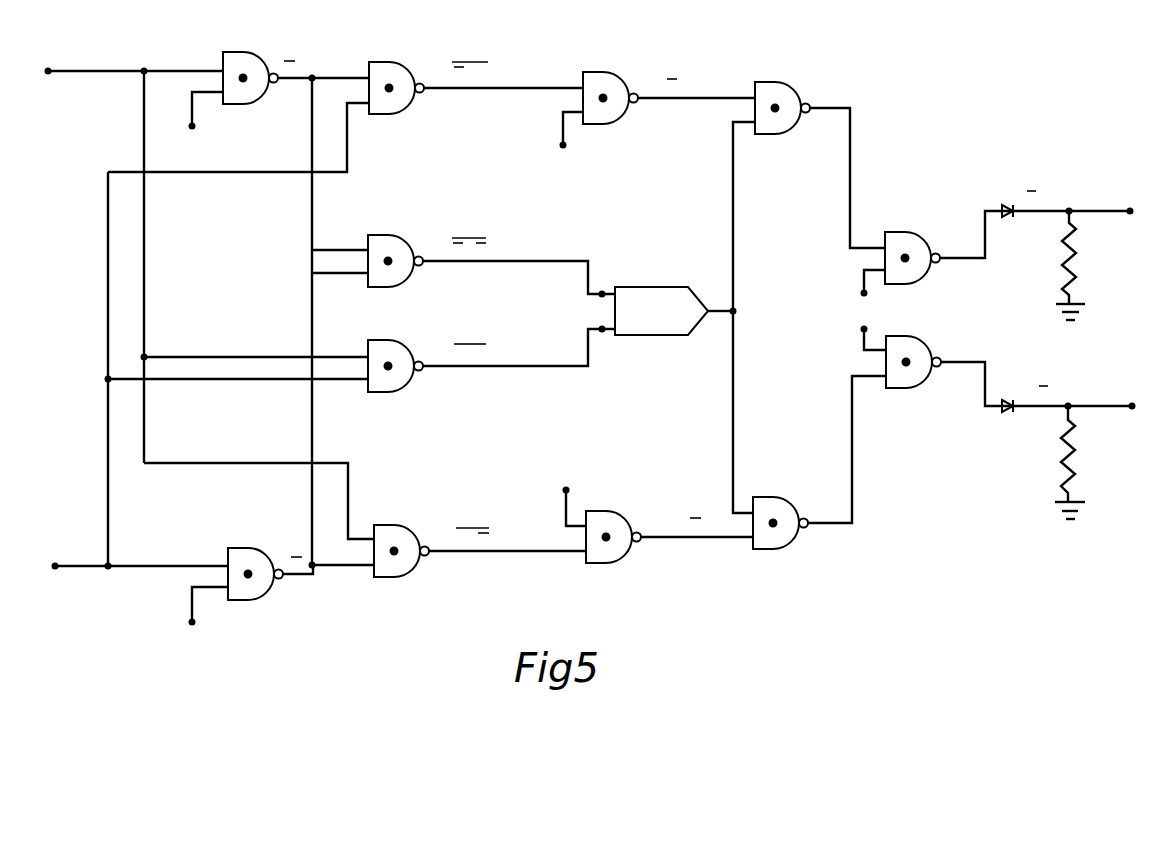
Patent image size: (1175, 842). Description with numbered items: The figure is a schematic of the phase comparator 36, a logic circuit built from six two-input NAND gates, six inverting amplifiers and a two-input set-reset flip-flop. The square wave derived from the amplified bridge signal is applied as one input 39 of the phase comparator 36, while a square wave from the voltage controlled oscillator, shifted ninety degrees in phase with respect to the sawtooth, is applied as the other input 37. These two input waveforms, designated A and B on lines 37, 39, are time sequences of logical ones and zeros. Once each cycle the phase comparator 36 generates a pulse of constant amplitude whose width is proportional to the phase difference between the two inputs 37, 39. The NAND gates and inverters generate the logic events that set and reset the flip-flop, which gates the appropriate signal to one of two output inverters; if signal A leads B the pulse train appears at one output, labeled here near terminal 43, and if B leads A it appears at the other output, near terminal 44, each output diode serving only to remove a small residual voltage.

The phase comparator 36 is at (971, 545).
The other input of the phase comparator 37 is at (56, 569).
The one input of the phase comparator 39 is at (46, 74).
The output terminal (A-bar·B if A leads B) 43 is at (1130, 214).
The output terminal (A·B-bar if B leads A) 44 is at (1132, 409).